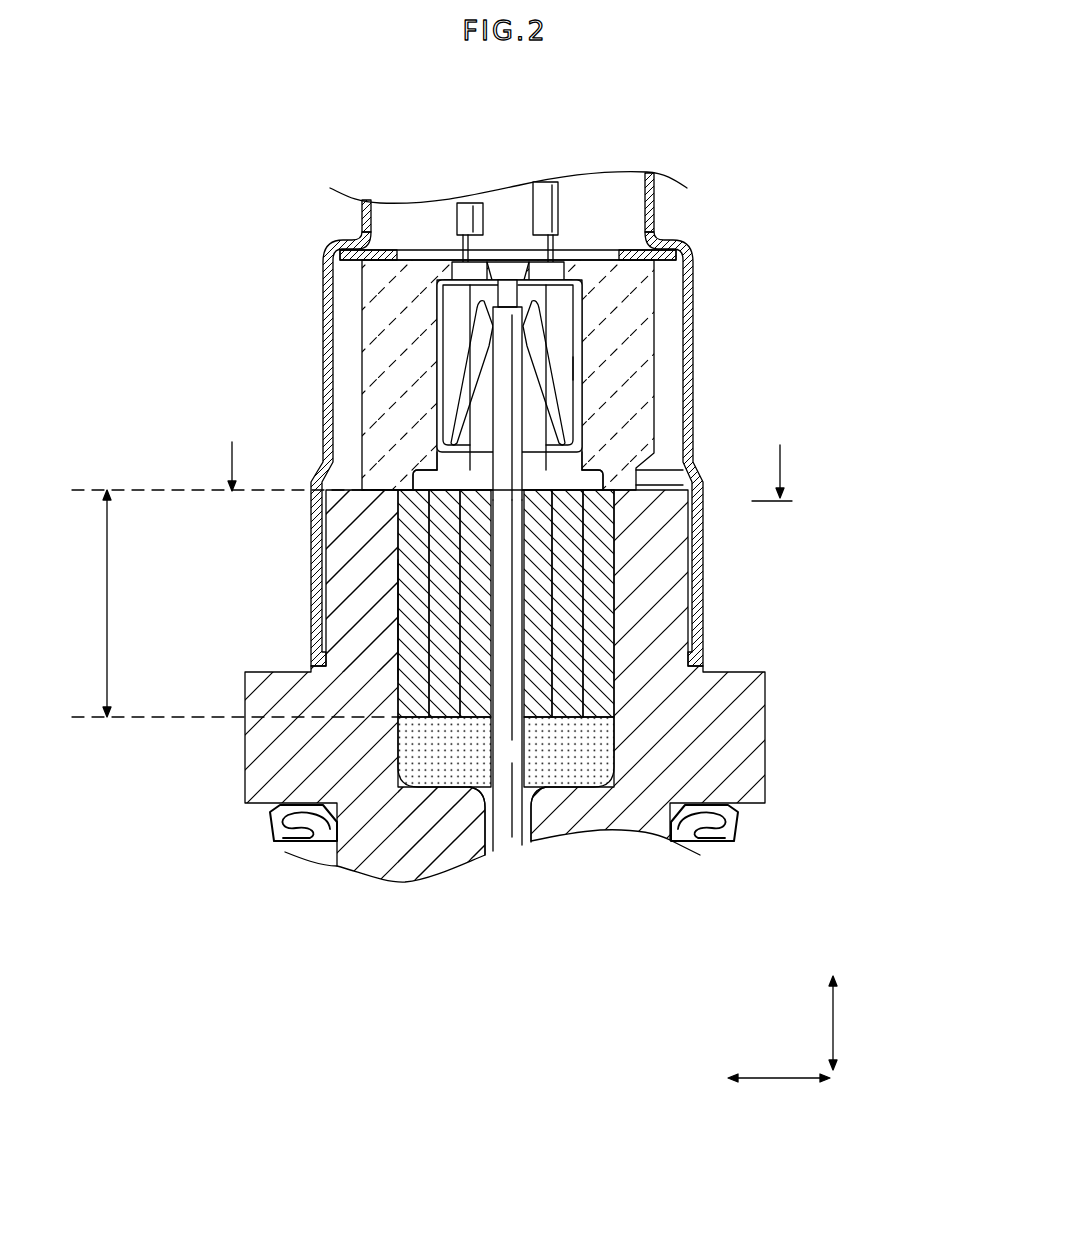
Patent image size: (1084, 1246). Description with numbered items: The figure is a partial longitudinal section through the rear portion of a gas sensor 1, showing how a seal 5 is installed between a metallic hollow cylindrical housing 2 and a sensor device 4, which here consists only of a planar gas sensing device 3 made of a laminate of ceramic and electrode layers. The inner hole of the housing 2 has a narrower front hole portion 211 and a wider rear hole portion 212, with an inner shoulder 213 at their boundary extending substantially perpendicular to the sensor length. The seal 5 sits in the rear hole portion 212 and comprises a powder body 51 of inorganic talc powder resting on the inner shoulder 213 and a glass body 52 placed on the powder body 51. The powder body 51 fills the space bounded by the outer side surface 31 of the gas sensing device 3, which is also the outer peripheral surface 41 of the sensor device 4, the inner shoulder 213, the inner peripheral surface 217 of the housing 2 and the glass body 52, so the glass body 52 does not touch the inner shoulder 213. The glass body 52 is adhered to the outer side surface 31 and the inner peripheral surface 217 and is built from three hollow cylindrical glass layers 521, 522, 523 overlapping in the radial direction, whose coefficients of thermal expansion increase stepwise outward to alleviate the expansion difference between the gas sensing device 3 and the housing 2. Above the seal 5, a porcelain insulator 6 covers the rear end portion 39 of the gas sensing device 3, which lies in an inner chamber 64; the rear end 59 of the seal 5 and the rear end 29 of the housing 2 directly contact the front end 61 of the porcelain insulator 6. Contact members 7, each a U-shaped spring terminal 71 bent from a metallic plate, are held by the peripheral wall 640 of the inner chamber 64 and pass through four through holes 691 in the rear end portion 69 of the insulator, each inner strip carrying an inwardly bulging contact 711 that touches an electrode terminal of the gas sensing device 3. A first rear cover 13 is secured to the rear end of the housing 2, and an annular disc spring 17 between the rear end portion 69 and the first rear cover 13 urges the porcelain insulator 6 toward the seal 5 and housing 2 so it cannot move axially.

The gas sensor 1 is at (325, 906).
The housing 2 is at (507, 738).
The gas sensing device 3 is at (513, 753).
The sensor device 4 is at (675, 622).
The seal 5 is at (663, 635).
The porcelain insulator 6 is at (390, 407).
The contact members 7 is at (447, 349).
The first rear cover 13 is at (697, 570).
The annular disc spring 17 is at (656, 224).
The rear end of the housing 29 is at (355, 513).
The outer side surface of the gas sensing device 31 is at (490, 687).
The rear end portion of the gas sensing device 39 is at (508, 343).
The outer peripheral surface of the sensor device 41 is at (345, 758).
The powder body 51 is at (435, 757).
The glass body 52 is at (663, 635).
The rear end of the seal 59 is at (566, 525).
The front end of the porcelain insulator 61 is at (388, 478).
The inner chamber 64 is at (528, 413).
The rear end portion of the porcelain insulator 69 is at (407, 252).
The spring terminal 71 is at (436, 332).
The front hole portion 211 is at (487, 823).
The rear hole portion 212 is at (397, 637).
The inner shoulder 213 is at (567, 790).
The inner peripheral surface of the housing 217 is at (397, 757).
The glass layer 521 is at (533, 606).
The glass layer 522 is at (567, 649).
The glass layer 523 is at (591, 695).
The peripheral wall of the inner chamber 640 is at (576, 372).
The through holes 691 is at (458, 265).
The contact 711 is at (486, 332).